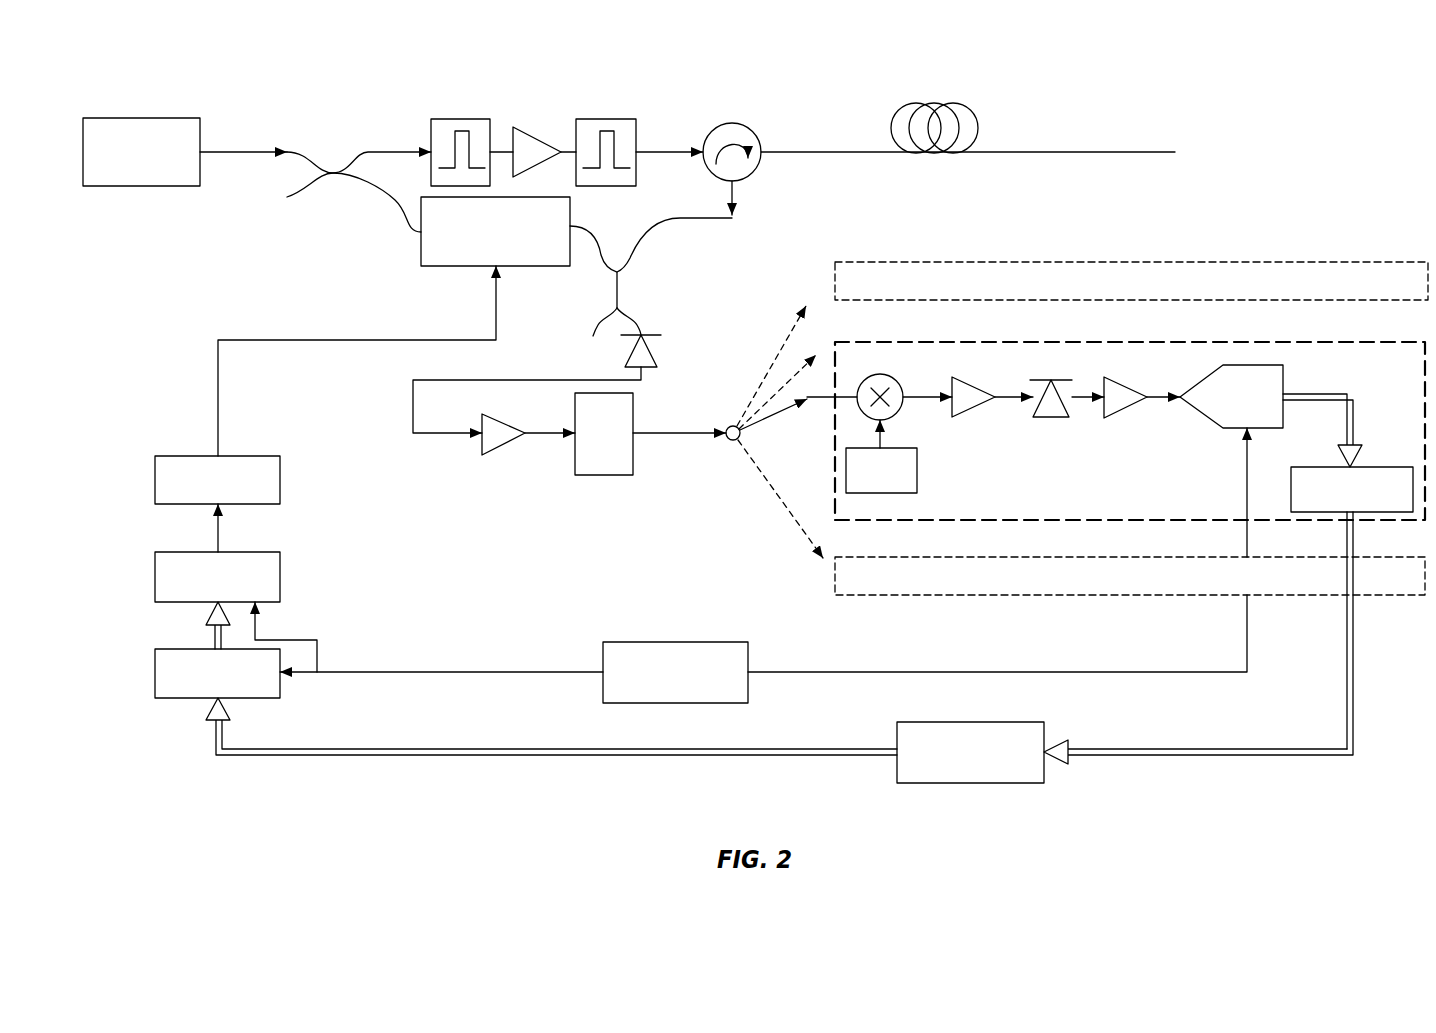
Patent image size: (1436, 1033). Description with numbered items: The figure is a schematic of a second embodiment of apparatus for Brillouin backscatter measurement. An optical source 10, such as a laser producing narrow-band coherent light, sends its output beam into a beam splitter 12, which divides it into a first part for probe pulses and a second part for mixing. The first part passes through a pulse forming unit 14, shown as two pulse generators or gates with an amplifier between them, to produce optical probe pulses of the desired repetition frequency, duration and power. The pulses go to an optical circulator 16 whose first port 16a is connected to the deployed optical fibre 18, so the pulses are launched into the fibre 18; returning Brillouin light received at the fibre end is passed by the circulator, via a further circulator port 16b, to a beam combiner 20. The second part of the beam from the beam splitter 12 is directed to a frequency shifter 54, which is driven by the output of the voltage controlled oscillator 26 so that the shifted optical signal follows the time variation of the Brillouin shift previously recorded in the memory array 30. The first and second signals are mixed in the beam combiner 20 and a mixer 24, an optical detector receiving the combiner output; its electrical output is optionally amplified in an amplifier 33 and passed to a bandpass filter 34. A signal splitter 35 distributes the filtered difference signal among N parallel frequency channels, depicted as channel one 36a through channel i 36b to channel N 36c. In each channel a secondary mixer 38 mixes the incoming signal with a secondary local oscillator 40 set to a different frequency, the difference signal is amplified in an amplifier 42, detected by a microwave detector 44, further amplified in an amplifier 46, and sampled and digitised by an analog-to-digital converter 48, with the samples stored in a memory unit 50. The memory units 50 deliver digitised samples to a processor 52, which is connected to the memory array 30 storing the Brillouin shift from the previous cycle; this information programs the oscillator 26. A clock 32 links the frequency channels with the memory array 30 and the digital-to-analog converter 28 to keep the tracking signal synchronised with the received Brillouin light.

The optical source 10 is at (185, 152).
The beam splitter 12 is at (327, 182).
The pulse forming unit 14 is at (650, 110).
The optical circulator 16 is at (728, 123).
The first port 16a is at (757, 160).
The circulator return port 16b is at (739, 190).
The deployed optical fibre 18 is at (1093, 155).
The beam combiner 20 is at (627, 312).
The mixer 24 is at (657, 350).
The voltage controlled oscillator 26 is at (217, 480).
The digital-to-analog converter 28 is at (217, 553).
The memory array 30 is at (217, 650).
The clock 32 is at (751, 649).
The amplifier 33 is at (482, 457).
The bandpass filter 34 is at (650, 434).
The signal splitter 35 is at (729, 424).
The channel 1 36a is at (868, 262).
The channel i 36b is at (862, 342).
The channel N 36c is at (868, 557).
The secondary mixer 38 is at (884, 375).
The secondary local oscillator 40 is at (881, 456).
The amplifier 42 is at (972, 412).
The microwave detector 44 is at (1052, 418).
The amplifier 46 is at (1126, 410).
The analog-to-digital converter 48 is at (1231, 461).
The memory unit 50 is at (1348, 453).
The processor 52 is at (779, 647).
The frequency shifter 54 is at (394, 326).